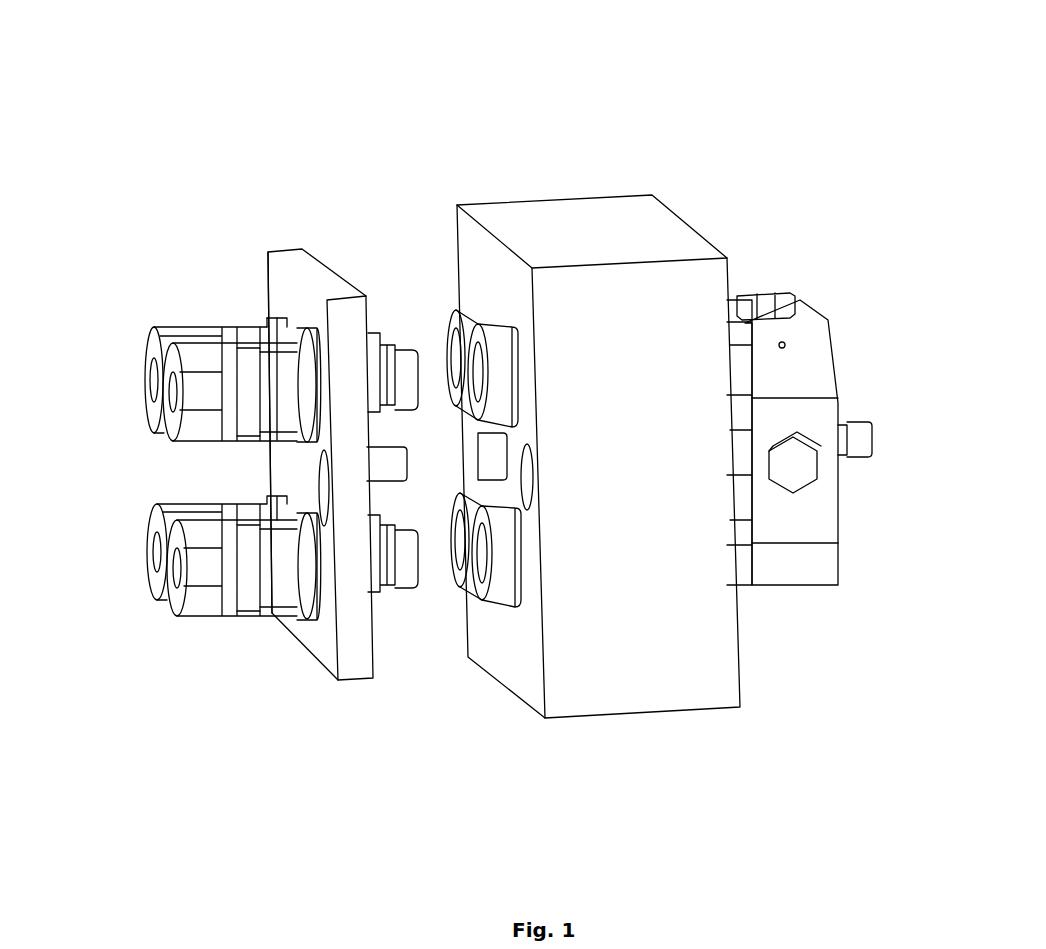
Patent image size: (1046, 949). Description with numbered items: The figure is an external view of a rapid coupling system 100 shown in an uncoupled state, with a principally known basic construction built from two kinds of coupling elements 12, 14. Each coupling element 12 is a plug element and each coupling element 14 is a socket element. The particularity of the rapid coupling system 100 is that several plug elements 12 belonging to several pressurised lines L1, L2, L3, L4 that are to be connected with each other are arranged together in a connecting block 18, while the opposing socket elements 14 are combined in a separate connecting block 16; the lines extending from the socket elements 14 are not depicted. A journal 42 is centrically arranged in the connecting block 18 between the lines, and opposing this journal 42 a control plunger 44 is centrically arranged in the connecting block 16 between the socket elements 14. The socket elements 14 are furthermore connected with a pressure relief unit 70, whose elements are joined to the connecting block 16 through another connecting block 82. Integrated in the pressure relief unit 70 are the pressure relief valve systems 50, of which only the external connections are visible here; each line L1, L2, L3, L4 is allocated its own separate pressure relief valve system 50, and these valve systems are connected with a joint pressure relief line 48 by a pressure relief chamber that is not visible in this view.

The rapid coupling system 100 is at (243, 102).
The coupling element 12 is at (203, 263).
The coupling element 14 is at (438, 232).
The connecting block 16 is at (665, 693).
The connecting block 18 is at (317, 643).
The journal 42 is at (403, 453).
The control plunger 44 is at (497, 457).
The joint pressure relief line 48 is at (872, 440).
The pressure relief valve system 50 is at (766, 290).
The pressure relief unit 70 is at (845, 597).
The connecting block 82 is at (823, 358).
The pressurised line L1 is at (165, 437).
The pressurised line L2 is at (167, 618).
The pressurised line L3 is at (140, 378).
The pressurised line L4 is at (140, 557).